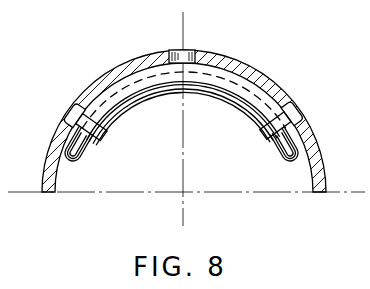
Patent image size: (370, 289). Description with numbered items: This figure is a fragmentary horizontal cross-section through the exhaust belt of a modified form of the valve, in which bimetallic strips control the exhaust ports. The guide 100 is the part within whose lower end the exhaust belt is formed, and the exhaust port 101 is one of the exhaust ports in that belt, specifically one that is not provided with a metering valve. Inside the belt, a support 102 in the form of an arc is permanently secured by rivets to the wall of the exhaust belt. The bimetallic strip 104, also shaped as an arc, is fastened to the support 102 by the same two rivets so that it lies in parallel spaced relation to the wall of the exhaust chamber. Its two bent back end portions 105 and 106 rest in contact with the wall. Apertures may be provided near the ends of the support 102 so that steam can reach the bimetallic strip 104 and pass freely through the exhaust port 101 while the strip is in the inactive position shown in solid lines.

The guide 100 is at (275, 93).
The exhaust port 101 is at (183, 54).
The support 102 is at (152, 100).
The bimetallic strip 104 is at (226, 88).
The bent back end portion 105 is at (76, 158).
The bent back end portion 106 is at (287, 152).